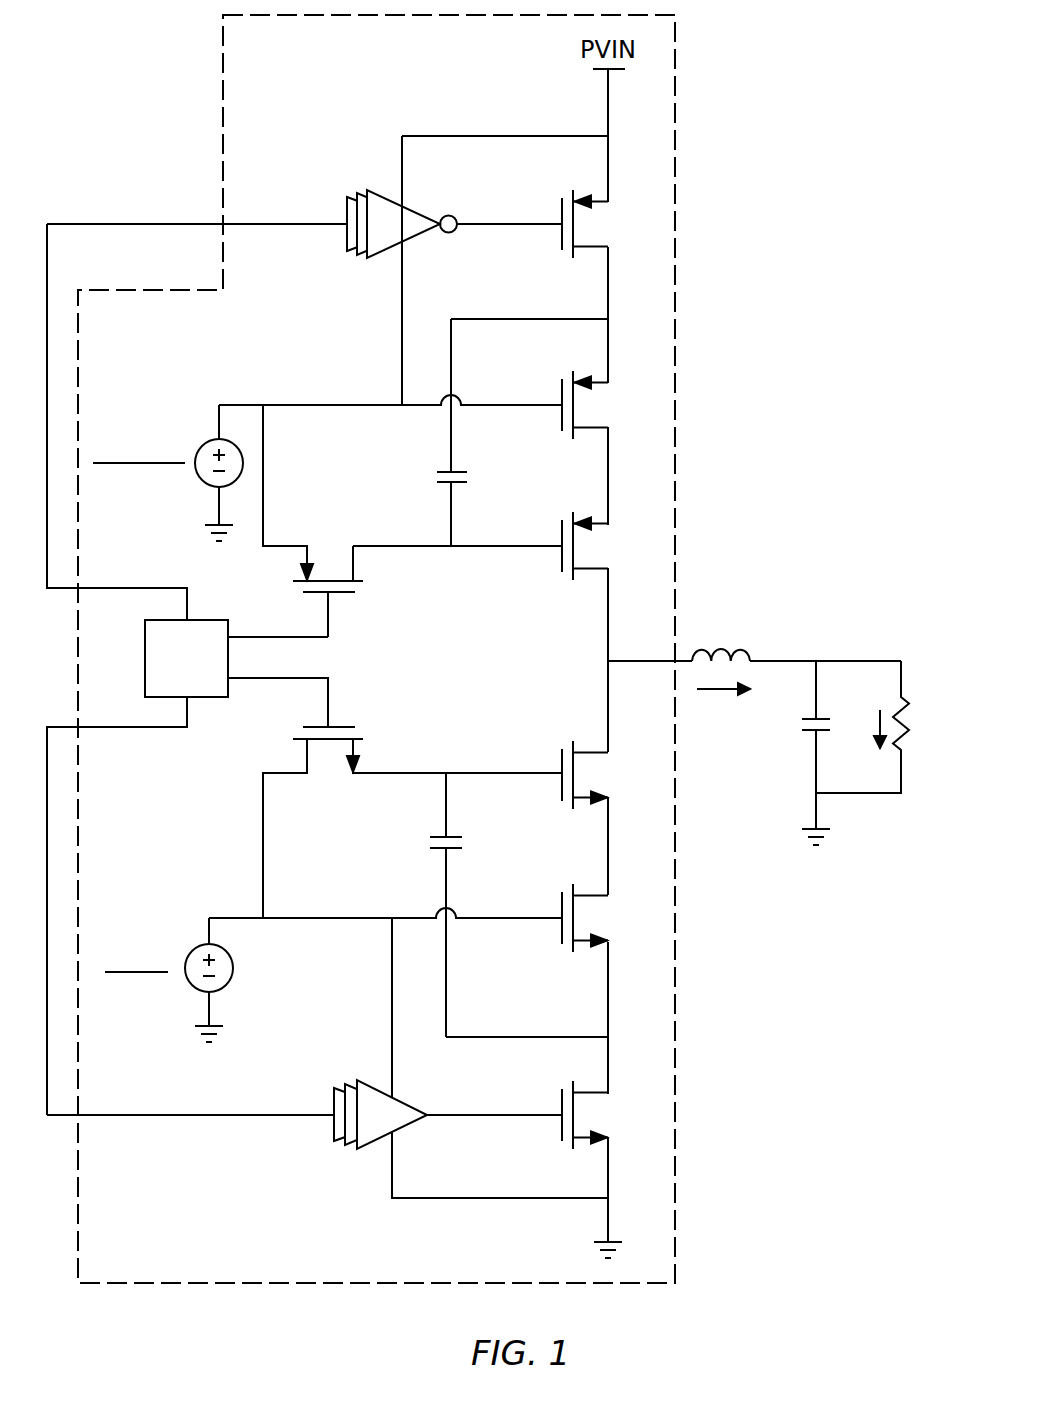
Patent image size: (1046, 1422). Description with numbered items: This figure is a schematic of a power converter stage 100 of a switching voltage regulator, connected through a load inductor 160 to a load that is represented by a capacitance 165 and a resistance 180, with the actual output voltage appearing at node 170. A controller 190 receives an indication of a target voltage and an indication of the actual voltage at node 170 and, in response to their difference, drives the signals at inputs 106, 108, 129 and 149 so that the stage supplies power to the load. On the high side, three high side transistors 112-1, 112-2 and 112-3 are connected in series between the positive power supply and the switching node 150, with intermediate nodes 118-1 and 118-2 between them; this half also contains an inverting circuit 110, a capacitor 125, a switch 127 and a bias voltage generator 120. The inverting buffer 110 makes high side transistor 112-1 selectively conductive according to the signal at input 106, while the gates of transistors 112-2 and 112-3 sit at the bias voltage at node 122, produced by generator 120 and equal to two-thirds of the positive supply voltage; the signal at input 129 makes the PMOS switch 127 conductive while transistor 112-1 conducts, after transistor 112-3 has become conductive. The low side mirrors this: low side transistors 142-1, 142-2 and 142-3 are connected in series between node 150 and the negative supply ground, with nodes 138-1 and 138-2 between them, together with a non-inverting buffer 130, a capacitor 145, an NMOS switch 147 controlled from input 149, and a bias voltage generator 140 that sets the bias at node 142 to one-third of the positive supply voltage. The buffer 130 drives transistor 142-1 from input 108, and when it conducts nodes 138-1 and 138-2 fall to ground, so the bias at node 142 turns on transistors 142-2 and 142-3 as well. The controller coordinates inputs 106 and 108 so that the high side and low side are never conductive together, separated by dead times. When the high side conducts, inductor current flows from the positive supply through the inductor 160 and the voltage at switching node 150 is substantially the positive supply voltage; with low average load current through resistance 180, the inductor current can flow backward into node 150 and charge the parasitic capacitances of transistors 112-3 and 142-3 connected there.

The power converter stage 100 is at (675, 85).
The input 106 is at (197, 207).
The input 108 is at (190, 1099).
The inverting circuit 110 is at (381, 191).
The high side transistor 112-1 is at (614, 224).
The high side transistor 112-2 is at (614, 405).
The high side transistor 112-3 is at (617, 546).
The node 118-1 is at (529, 378).
The node 118-2 is at (575, 477).
The bias voltage generator 120 is at (205, 442).
The node 122 is at (383, 389).
The capacitor 125 is at (427, 506).
The switch 127 is at (412, 521).
The input 129 is at (302, 622).
The inverting circuit 130 is at (372, 1146).
The node 138-1 is at (527, 1020).
The node 138-2 is at (574, 847).
The bias voltage generator 140 is at (232, 979).
The node 142 is at (396, 1041).
The low side transistor 142-1 is at (618, 1115).
The low side transistor 142-2 is at (617, 918).
The low side transistor 142-3 is at (617, 775).
The capacitor 145 is at (422, 905).
The switch 147 is at (412, 822).
The input 149 is at (302, 702).
The switching node 150 is at (626, 655).
The load inductor 160 is at (754, 669).
The capacitance 165 is at (795, 753).
The node 170 is at (858, 644).
The resistance 180 is at (886, 727).
The controller 190 is at (205, 620).